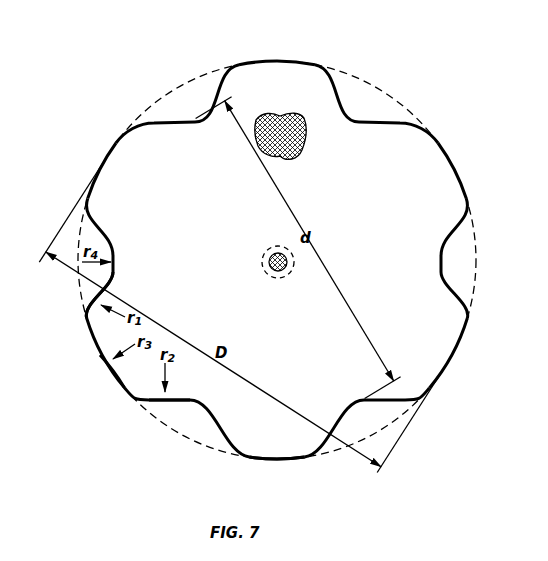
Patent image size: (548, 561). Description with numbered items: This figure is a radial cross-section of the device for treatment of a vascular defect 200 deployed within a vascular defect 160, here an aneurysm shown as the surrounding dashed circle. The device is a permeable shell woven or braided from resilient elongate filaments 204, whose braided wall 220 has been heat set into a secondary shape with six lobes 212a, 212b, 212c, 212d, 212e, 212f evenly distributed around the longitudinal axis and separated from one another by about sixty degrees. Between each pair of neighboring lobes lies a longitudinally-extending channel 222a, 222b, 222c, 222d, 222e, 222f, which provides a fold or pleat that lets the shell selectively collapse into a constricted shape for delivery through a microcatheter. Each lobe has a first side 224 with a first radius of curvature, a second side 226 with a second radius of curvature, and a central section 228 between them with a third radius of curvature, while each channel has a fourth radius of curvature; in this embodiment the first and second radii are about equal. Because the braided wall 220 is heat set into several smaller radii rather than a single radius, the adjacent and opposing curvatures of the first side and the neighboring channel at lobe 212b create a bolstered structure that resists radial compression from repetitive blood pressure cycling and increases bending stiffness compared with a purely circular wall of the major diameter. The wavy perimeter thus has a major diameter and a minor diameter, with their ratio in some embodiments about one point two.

The vascular defect 160 is at (364, 81).
The device for treatment of a vascular defect 200 is at (176, 95).
The resilient elongate filaments 204 is at (232, 69).
The lobe 212a is at (272, 458).
The lobe 212b is at (109, 362).
The lobe 212c is at (113, 147).
The lobe 212d is at (289, 64).
The lobe 212e is at (444, 148).
The lobe 212f is at (447, 364).
The braided wall 220 is at (288, 459).
The longitudinally-extending channel 222a is at (195, 404).
The longitudinally-extending channel 222b is at (78, 232).
The longitudinally-extending channel 222c is at (190, 120).
The longitudinally-extending channel 222d is at (361, 117).
The longitudinally-extending channel 222e is at (442, 257).
The longitudinally-extending channel 222f is at (360, 403).
The first side 224 is at (96, 299).
The second side 226 is at (160, 404).
The central section 228 is at (108, 360).